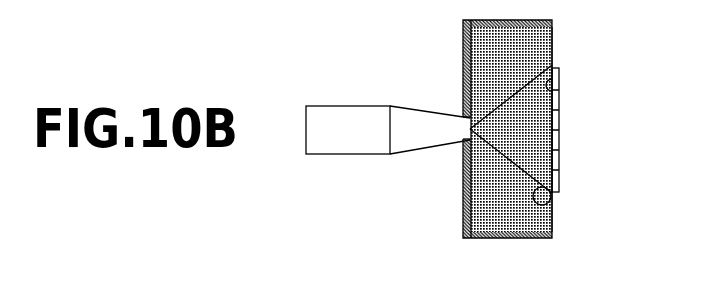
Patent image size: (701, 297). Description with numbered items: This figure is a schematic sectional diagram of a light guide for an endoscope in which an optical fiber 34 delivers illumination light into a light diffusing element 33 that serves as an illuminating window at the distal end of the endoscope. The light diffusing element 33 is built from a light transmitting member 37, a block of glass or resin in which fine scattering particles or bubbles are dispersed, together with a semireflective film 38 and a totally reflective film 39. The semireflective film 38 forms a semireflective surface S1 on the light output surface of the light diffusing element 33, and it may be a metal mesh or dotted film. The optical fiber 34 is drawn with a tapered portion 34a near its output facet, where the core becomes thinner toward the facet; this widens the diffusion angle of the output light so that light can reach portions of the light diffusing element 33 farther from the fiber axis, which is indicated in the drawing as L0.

The light diffusing element 33 is at (489, 253).
The optical fiber 34 is at (368, 147).
The tapered portion 34a is at (426, 119).
The light transmitting member 37 is at (482, 201).
The semireflective film 38 is at (556, 130).
The totally reflective film 39 is at (467, 226).
The semireflective surface S1 is at (556, 80).
The optical axis / light spot L0 is at (552, 200).